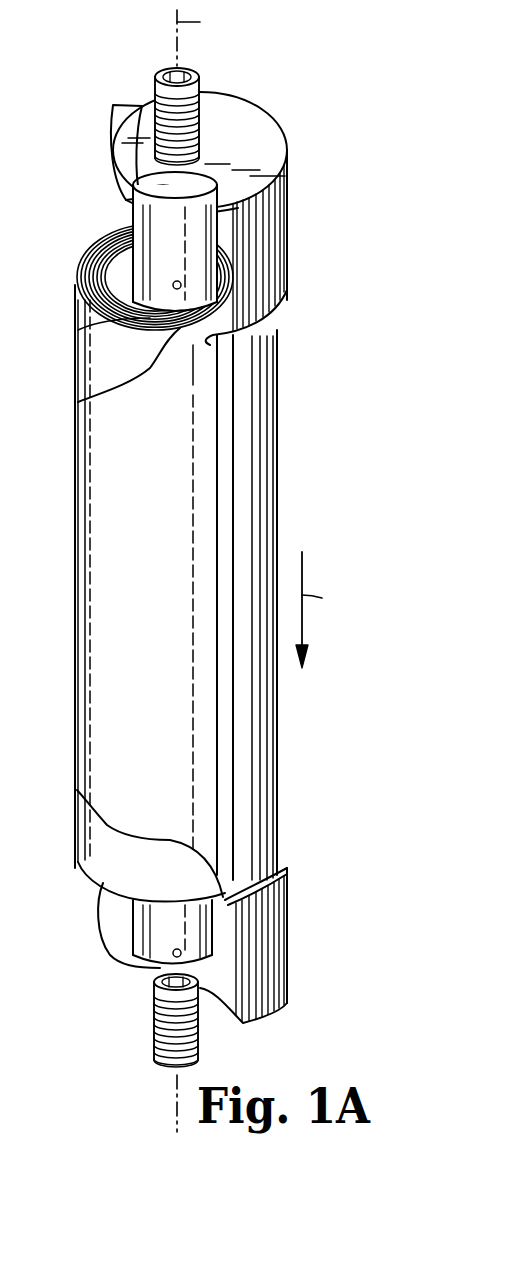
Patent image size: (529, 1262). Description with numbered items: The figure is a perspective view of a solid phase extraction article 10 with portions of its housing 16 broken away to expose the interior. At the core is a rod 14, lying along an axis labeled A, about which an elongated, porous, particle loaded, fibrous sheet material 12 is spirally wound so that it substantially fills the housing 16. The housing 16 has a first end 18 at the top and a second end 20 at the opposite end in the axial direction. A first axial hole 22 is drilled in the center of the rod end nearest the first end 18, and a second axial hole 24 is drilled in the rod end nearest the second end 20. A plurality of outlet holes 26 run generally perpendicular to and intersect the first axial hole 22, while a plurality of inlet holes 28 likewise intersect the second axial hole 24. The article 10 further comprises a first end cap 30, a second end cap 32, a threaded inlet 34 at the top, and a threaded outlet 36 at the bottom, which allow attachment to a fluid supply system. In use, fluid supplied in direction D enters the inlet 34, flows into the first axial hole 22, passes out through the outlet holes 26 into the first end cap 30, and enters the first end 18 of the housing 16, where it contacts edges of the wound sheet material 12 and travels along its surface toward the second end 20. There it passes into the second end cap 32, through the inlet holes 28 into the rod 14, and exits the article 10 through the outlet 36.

The solid phase extraction article 10 is at (200, 571).
The particle loaded fibrous sheet material 12 is at (90, 272).
The rod 14 is at (227, 218).
The housing 16 is at (110, 697).
The first end 18 is at (78, 274).
The second end 20 is at (92, 878).
The first axial hole 22 is at (133, 183).
The second axial hole 24 is at (150, 970).
The outlet holes 26 is at (120, 236).
The inlet holes 28 is at (135, 943).
The first end cap 30 is at (260, 272).
The second end cap 32 is at (258, 938).
The inlet 34 is at (155, 92).
The outlet 36 is at (200, 1048).